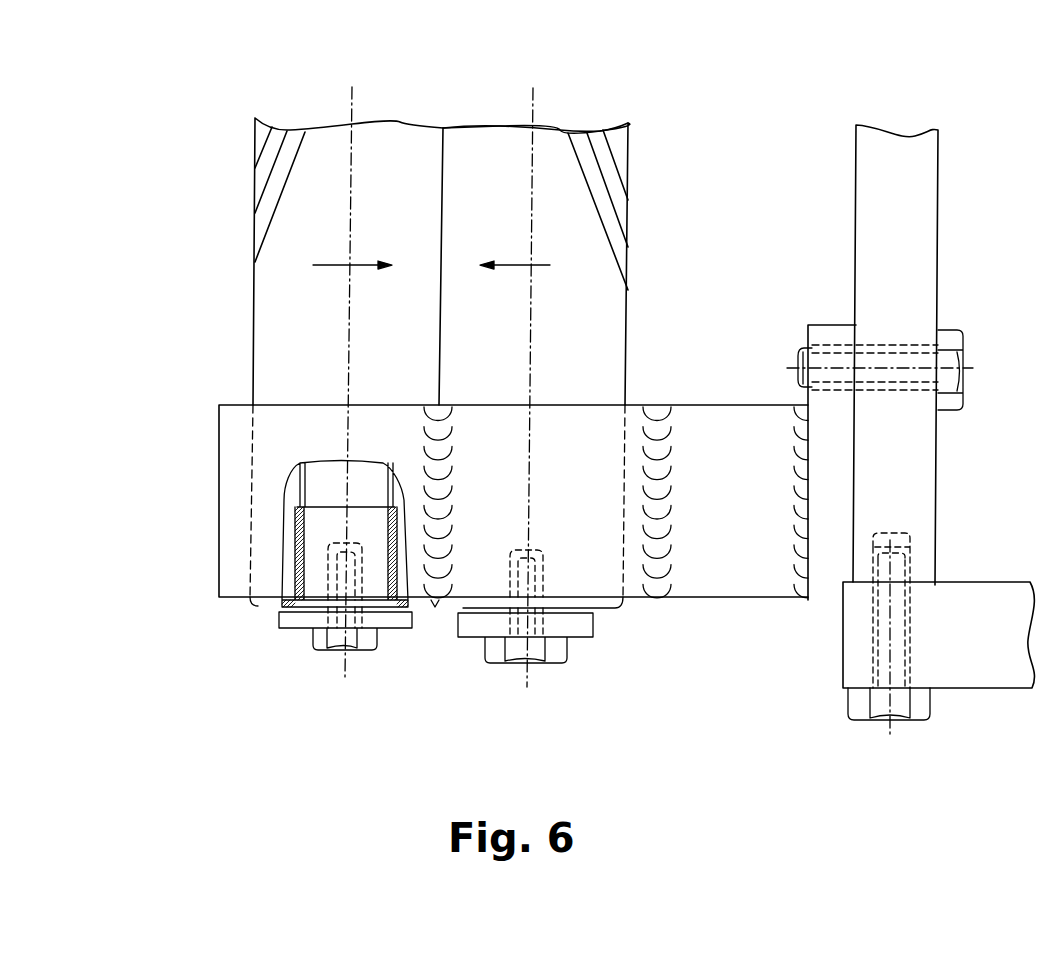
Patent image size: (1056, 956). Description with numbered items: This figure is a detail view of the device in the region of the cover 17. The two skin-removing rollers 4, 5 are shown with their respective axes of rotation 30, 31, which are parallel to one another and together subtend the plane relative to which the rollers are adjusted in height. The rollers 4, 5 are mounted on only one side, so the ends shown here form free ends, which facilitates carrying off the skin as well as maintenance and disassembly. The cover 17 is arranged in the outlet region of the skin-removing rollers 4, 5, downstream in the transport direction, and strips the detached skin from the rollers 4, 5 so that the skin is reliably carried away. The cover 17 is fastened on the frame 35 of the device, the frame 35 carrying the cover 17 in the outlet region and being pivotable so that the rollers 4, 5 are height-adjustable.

The skin-removing roller 4 is at (264, 353).
The skin-removing roller 5 is at (617, 341).
The cover 17 is at (231, 515).
The axis of rotation 30 is at (352, 98).
The axis of rotation 31 is at (533, 103).
The frame 35 is at (923, 252).